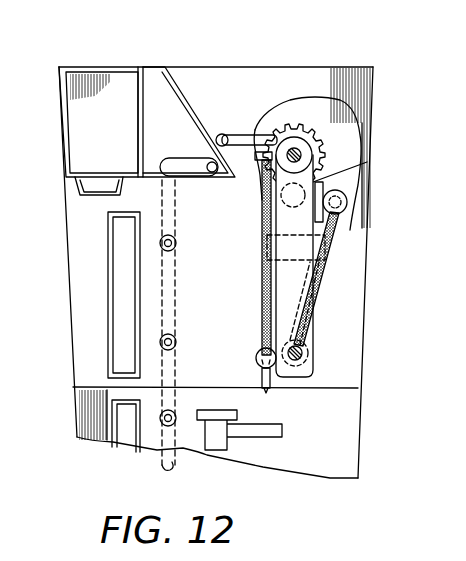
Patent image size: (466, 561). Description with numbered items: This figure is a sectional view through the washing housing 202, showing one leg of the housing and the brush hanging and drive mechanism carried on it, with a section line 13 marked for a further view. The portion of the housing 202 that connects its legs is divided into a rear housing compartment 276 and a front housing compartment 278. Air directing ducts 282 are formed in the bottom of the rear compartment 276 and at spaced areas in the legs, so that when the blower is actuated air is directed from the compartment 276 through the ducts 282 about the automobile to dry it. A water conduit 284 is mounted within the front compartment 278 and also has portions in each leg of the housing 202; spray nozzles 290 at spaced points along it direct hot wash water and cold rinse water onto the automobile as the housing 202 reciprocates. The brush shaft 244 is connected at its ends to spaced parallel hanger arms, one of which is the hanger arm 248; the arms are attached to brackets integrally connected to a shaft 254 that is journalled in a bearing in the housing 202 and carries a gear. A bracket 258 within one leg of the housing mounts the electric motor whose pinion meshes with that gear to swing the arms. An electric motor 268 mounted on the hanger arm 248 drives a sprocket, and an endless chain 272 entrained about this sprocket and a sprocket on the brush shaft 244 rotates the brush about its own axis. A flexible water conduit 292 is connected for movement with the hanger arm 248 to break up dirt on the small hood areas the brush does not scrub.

The housing 202 is at (267, 75).
The rear housing compartment 276 is at (107, 77).
The front housing compartment 278 is at (165, 80).
The air directing ducts 282 is at (85, 190).
The water conduit 284 is at (188, 167).
The electric motor 268 is at (322, 152).
The shaft 254 is at (302, 162).
The hanger arm 248 is at (305, 333).
The brush shaft 244 is at (300, 360).
The endless chain 272 is at (332, 275).
The bracket 258 is at (318, 249).
The flexible water conduit 292 is at (268, 300).
The spray nozzles 290 is at (268, 390).
The section line 13 is at (243, 373).